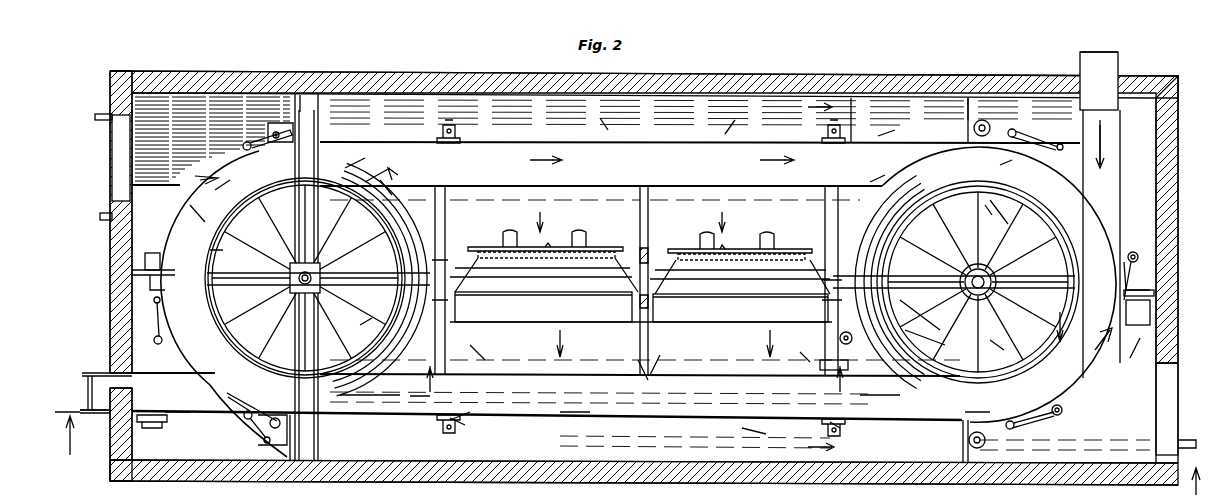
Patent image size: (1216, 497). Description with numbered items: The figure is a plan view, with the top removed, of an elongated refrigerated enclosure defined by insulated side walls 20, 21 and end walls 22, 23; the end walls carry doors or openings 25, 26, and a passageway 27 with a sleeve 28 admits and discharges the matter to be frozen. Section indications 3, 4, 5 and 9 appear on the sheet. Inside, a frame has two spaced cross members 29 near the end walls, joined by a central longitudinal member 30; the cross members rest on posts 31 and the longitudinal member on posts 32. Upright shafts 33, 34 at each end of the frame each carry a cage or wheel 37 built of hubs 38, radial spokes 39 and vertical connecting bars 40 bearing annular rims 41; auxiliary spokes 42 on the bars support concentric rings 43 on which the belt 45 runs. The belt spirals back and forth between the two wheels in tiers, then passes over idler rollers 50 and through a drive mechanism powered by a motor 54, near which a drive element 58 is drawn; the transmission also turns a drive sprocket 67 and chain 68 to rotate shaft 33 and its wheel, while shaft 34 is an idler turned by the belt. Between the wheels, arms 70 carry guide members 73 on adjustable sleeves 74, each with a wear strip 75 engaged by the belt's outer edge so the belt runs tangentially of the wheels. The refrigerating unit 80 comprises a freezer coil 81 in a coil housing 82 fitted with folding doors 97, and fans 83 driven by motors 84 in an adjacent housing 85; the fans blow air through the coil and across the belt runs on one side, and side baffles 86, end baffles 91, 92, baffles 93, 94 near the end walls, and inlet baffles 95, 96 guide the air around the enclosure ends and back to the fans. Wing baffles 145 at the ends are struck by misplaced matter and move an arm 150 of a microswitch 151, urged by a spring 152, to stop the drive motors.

The section line 3 is at (73, 435).
The section line 4 is at (635, 389).
The section line 5 is at (972, 276).
The air flow arrows 9 is at (1080, 335).
The insulated side wall 20 is at (644, 472).
The insulated side wall 21 is at (776, 75).
The end wall 22 is at (1170, 178).
The end wall 23 is at (110, 240).
The door 25 is at (1156, 426).
The door 26 is at (112, 143).
The passageway 27 is at (98, 372).
The sleeve 28 is at (88, 380).
The cross member 29 is at (320, 130).
The central longitudinal member 30 is at (540, 296).
The post 31 is at (992, 126).
The post 32 is at (462, 284).
The upright shaft 33 is at (994, 276).
The upright shaft 34 is at (290, 272).
The cage or wheel 37 is at (962, 185).
The hub 38 is at (996, 290).
The radial spoke 39 is at (336, 248).
The connecting bar 40 is at (222, 283).
The annular rim 41 is at (596, 297).
The auxiliary spoke 42 is at (678, 272).
The concentric ring 43 is at (385, 296).
The belt 45 is at (1102, 398).
The idler roller 50 is at (150, 430).
The motor 54 is at (826, 316).
The base 58 is at (820, 364).
The drive sprocket 67 is at (838, 337).
The chain 68 is at (933, 322).
The arm 70 is at (447, 124).
The guide member 73 is at (460, 141).
The sleeve 74 is at (458, 130).
The wear strip 75 is at (845, 143).
The refrigerating unit 80 is at (636, 214).
The freezer coil 81 is at (665, 343).
The coil housing 82 is at (650, 306).
The fan 83 is at (634, 254).
The motor 84 is at (510, 230).
The fan housing 85 is at (616, 258).
The side baffle 86 is at (620, 393).
The upper end baffle 91 is at (302, 96).
The lower end baffle 92 is at (290, 470).
The upper baffle 93 is at (132, 265).
The lower baffle 94 is at (1156, 292).
The baffle 95 is at (446, 208).
The baffle 96 is at (880, 184).
The folding door 97 is at (640, 369).
The wing baffle 145 is at (1178, 218).
The arm 150 is at (270, 136).
The microswitch 151 is at (1140, 325).
The spring 152 is at (1150, 260).